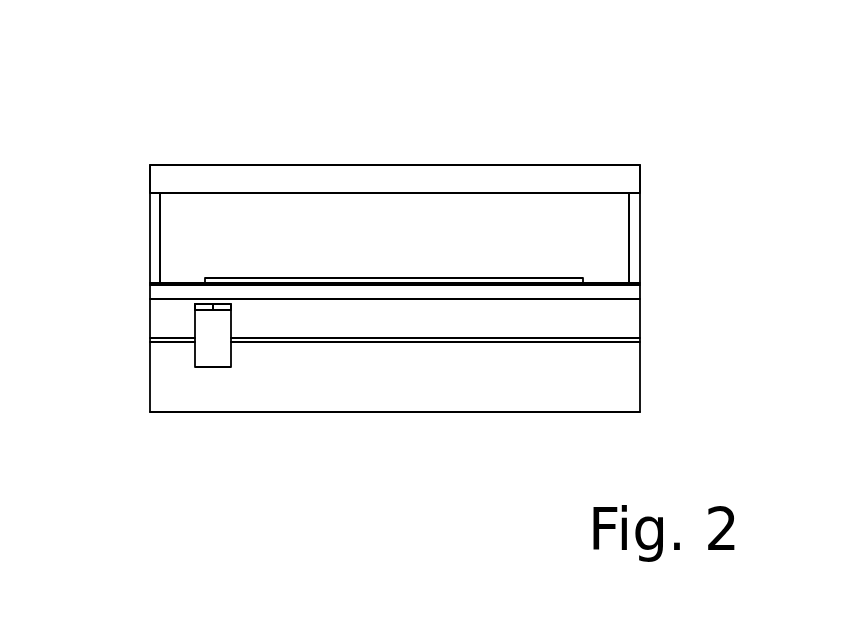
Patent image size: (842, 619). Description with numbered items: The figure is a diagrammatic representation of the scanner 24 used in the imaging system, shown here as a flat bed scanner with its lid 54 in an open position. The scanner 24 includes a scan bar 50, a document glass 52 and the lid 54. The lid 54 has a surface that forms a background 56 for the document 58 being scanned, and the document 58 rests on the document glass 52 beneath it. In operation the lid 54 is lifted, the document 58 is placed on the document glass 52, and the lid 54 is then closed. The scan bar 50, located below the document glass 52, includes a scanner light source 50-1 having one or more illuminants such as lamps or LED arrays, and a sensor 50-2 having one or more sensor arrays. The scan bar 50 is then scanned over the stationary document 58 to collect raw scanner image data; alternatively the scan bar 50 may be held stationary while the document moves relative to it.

The scanner 24 is at (147, 101).
The lid 54 is at (641, 178).
The background 56 is at (352, 204).
The document 58 is at (252, 278).
The document glass 52 is at (618, 293).
The scan bar 50 is at (197, 378).
The scanner light source 50-1 is at (195, 305).
The sensor 50-2 is at (231, 304).